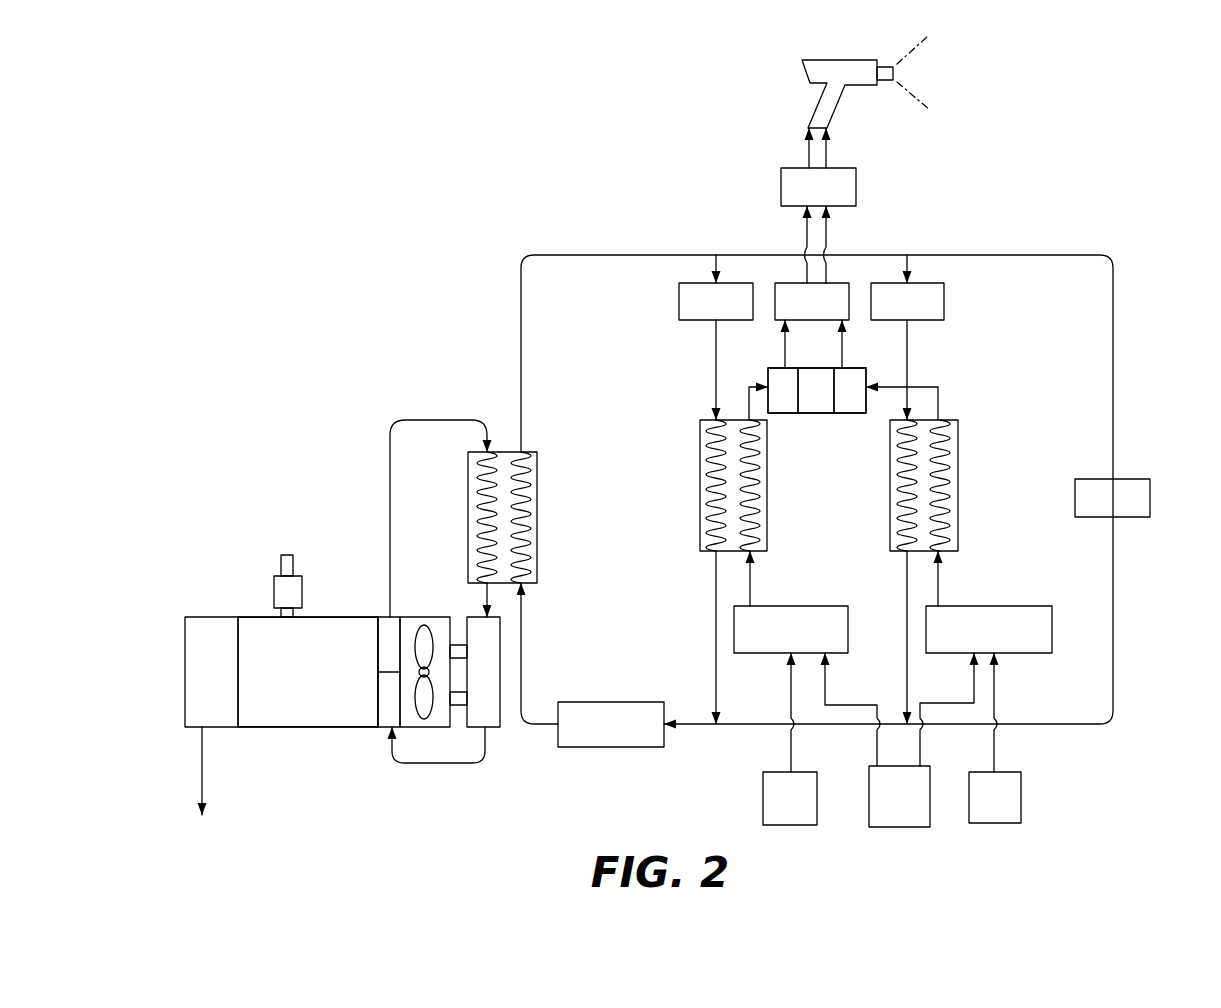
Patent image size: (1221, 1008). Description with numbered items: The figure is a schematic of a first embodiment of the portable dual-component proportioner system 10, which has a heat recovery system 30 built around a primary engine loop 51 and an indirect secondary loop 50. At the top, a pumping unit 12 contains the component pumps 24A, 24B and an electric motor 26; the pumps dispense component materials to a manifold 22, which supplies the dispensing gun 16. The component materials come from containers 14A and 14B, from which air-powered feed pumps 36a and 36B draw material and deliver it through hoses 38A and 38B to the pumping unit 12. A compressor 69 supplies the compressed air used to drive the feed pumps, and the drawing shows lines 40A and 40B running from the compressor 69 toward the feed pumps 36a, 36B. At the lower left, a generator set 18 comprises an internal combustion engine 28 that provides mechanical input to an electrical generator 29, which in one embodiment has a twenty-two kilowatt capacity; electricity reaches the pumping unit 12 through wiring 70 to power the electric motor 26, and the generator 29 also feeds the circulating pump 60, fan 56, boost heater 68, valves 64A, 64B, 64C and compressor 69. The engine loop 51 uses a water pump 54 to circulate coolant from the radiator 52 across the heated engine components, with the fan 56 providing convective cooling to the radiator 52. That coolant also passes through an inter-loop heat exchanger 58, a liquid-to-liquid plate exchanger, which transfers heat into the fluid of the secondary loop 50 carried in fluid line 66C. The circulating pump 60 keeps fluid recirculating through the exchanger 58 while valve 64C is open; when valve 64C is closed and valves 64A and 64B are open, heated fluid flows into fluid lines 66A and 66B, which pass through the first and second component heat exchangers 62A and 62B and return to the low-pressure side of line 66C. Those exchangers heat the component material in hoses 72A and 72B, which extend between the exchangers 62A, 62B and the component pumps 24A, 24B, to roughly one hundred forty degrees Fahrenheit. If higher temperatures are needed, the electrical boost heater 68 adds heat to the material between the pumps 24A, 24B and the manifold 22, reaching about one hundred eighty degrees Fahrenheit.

The dual-component proportioner system 10 is at (775, 212).
The pumping unit 12 is at (774, 364).
The container 14A is at (790, 739).
The container 14B is at (995, 738).
The dispensing gun 16 is at (783, 82).
The generator set 18 is at (331, 787).
The manifold 22 is at (856, 180).
The component pump 24A is at (780, 413).
The component pump 24B is at (855, 413).
The electric motor 26 is at (818, 413).
The internal combustion engine 28 is at (308, 672).
The electrical generator 29 is at (185, 617).
The heat recovery system 30 is at (503, 398).
The feed pump 36a is at (848, 648).
The feed pump 36B is at (1052, 648).
The hose 38A is at (750, 581).
The hose 38B is at (938, 581).
The first sensor line 40A is at (877, 752).
The second sensor line 40B is at (920, 752).
The secondary loop 50 is at (565, 205).
The engine loop 51 is at (380, 432).
The radiator 52 is at (500, 722).
The water pump 54 is at (380, 718).
The fan 56 is at (435, 625).
The inter-loop heat exchanger 58 is at (537, 462).
The circulating pump 60 is at (618, 702).
The first component heat exchanger 62A is at (700, 430).
The second component heat exchanger 62B is at (958, 430).
The valve 64A is at (753, 292).
The valve 64B is at (944, 292).
The valve 64C is at (1150, 487).
The fluid line 66A is at (716, 688).
The fluid line 66B is at (907, 692).
The fluid line 66C is at (745, 255).
The electrical boost heater 68 is at (849, 292).
The compressor 69 is at (899, 796).
The wiring 70 is at (205, 752).
The hose 72A is at (749, 405).
The hose 72B is at (937, 395).